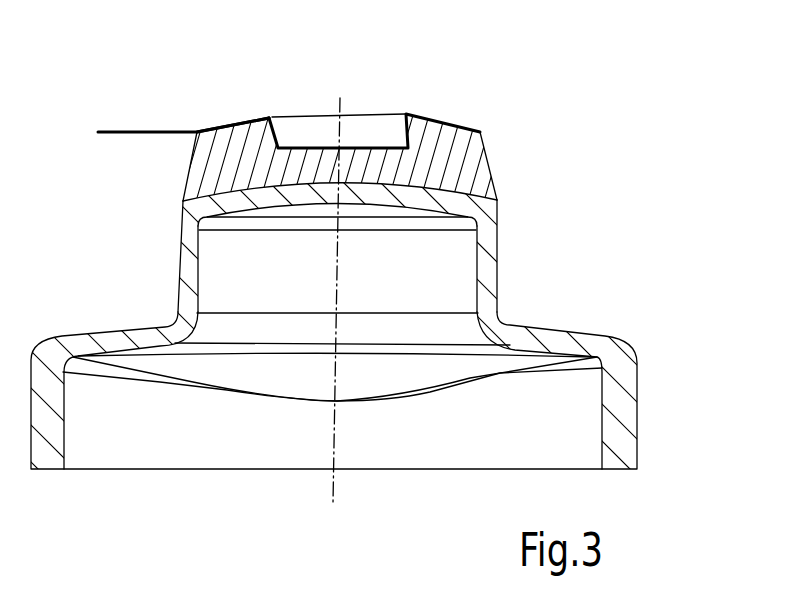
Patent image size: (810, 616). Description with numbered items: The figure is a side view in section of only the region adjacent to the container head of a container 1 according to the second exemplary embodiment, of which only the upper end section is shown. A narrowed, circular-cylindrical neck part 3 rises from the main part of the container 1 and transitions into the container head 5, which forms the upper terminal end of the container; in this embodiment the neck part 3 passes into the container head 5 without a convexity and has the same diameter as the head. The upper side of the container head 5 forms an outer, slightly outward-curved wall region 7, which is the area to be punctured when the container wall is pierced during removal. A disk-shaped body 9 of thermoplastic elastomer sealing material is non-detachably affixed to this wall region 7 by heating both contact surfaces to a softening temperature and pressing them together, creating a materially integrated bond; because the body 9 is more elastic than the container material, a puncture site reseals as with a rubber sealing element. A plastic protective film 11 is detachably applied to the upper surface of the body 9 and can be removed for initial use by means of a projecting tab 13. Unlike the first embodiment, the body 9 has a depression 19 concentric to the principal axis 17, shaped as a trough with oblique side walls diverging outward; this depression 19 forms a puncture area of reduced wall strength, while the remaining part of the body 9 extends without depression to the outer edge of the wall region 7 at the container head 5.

The container 1 is at (618, 425).
The neck part 3 is at (490, 270).
The container head 5 is at (493, 218).
The wall region 7 is at (257, 186).
The disk-shaped body 9 is at (468, 157).
The protective film 11 is at (241, 123).
The projecting tab 13 is at (112, 130).
The principal axis 17 is at (333, 478).
The depression 19 is at (373, 146).